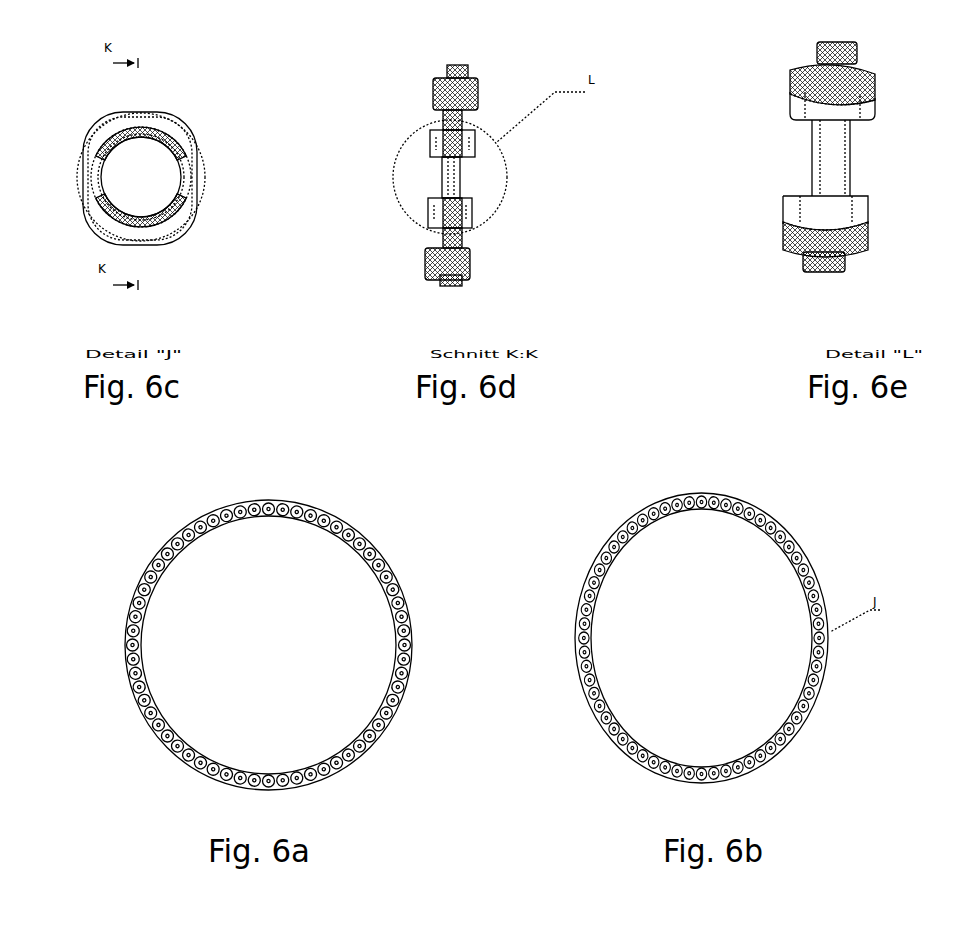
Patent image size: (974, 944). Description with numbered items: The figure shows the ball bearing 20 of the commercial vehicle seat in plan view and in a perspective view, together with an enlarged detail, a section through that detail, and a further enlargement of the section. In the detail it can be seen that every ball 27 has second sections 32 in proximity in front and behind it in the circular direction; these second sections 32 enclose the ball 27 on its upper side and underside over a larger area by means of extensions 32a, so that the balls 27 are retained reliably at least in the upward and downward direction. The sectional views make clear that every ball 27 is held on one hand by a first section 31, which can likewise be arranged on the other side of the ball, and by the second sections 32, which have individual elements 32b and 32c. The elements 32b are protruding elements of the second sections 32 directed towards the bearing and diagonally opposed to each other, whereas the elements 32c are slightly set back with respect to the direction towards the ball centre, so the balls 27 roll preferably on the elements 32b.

In FIG. 6A, the ball bearing 20 is at (423, 585).
In FIG. 6B, the ball bearing 20 is at (843, 583).
In FIG. 6C, the ball 27 is at (155, 178).
In FIG. 6A, the ball 27 is at (341, 522).
In FIG. 6D, the first section 31 is at (455, 185).
In FIG. 6E, the first section 31 is at (830, 163).
In FIG. 6C, the second section 32 is at (148, 133).
In FIG. 6C, the extension 32a is at (157, 143).
In FIG. 6D, the protruding element 32b is at (436, 146).
In FIG. 6E, the protruding element 32b is at (808, 105).
In FIG. 6D, the set-back element 32c is at (460, 153).
In FIG. 6E, the set-back element 32c is at (860, 108).